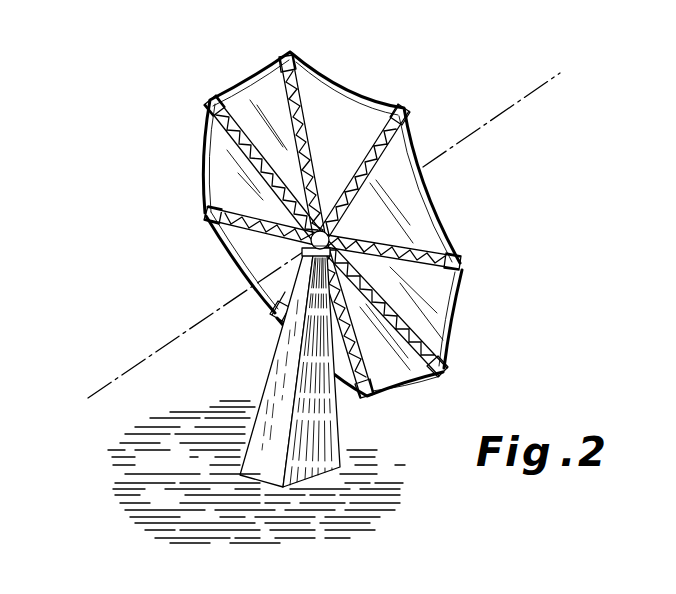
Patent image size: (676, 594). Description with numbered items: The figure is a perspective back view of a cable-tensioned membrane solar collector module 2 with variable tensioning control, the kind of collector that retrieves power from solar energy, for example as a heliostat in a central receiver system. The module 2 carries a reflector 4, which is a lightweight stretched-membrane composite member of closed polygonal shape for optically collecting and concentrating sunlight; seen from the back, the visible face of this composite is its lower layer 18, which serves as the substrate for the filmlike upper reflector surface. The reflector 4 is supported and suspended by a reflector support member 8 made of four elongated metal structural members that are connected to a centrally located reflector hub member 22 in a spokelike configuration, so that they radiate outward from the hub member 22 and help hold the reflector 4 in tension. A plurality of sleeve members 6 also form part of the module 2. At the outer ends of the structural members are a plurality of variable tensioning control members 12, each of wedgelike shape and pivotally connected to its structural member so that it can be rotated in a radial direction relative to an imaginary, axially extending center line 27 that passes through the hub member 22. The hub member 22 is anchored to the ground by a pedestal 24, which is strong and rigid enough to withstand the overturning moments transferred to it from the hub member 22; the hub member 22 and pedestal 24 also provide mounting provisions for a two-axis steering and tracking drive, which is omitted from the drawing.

The cable-tensioned membrane solar collector module 2 is at (365, 219).
The reflector 4 is at (390, 180).
The sleeve members 6 is at (431, 217).
The reflector support member 8 is at (427, 256).
The variable tensioning control members 12 is at (441, 382).
The lower layer 18 is at (360, 149).
The reflector hub member 22 is at (310, 243).
The pedestal 24 is at (319, 437).
The center line 27 is at (123, 373).